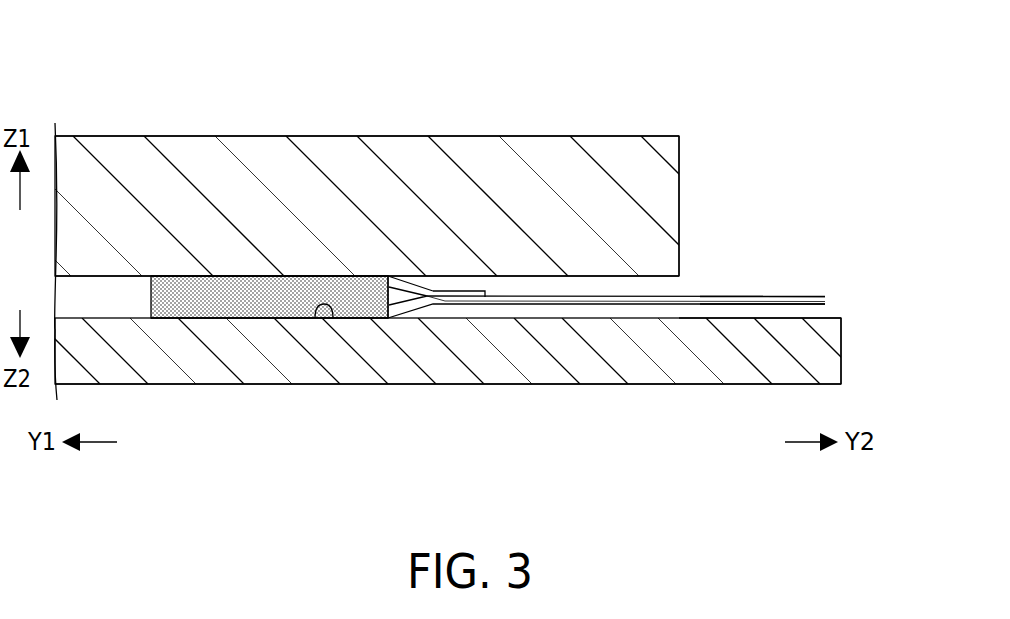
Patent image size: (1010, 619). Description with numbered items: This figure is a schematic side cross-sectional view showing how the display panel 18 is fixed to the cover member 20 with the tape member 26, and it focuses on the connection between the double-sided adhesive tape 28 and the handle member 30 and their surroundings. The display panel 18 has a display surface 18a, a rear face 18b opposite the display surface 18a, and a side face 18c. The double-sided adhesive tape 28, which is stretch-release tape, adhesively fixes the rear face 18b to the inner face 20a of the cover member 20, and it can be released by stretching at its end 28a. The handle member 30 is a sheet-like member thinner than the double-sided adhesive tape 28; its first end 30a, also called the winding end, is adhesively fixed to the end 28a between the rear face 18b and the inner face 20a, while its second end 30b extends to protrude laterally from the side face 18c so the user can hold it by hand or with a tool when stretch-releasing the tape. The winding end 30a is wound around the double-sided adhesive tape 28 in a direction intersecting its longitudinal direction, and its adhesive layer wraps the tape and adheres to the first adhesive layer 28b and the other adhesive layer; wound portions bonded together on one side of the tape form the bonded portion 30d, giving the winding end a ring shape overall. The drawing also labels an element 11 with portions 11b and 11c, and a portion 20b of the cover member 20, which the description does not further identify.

The display device 11 is at (63, 30).
The lower surface of display device 11b is at (227, 385).
The end surface of display device 11c is at (842, 347).
The display panel 18 is at (441, 132).
The display surface 18a is at (115, 135).
The rear face 18b is at (665, 283).
The side face 18c is at (680, 160).
The cover member 20 is at (286, 389).
The inner face 20a is at (325, 320).
The upper surface of substrate end portion 20b is at (833, 317).
The tape member 26 is at (535, 452).
The double-sided adhesive tape 28 is at (365, 305).
The end 28a is at (192, 318).
The first adhesive layer 28b is at (248, 276).
The handle member 30 is at (513, 303).
The first end 30a is at (418, 276).
The second end 30b is at (770, 295).
The bonded portion 30d is at (458, 276).